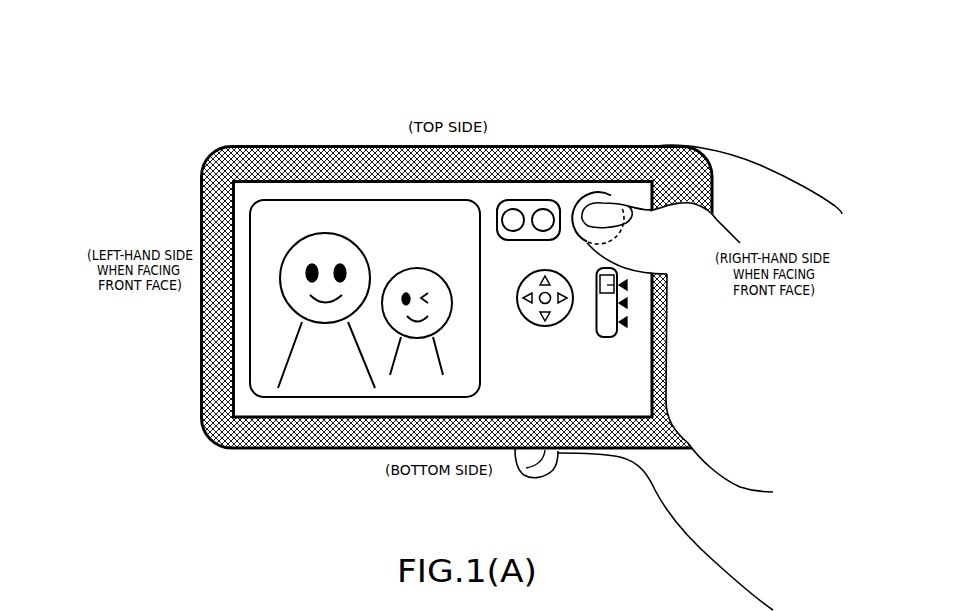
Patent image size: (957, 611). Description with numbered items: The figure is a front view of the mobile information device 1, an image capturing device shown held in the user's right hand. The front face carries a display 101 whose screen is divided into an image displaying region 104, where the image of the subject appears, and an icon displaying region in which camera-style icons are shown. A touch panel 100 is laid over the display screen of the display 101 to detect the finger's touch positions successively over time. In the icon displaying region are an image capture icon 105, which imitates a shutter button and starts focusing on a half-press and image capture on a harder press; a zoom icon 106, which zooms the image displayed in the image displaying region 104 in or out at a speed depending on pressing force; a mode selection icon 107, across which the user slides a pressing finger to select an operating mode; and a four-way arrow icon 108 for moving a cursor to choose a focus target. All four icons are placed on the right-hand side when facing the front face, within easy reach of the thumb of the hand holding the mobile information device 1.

The mobile information device 1 is at (288, 146).
The touch panel 100 is at (290, 405).
The display 101 is at (378, 405).
The image displaying region 104 is at (390, 200).
The image capture icon 105 is at (615, 195).
The zoom icon 106 is at (522, 200).
The mode selection icon 107 is at (603, 338).
The four-way arrow icon 108 is at (520, 310).